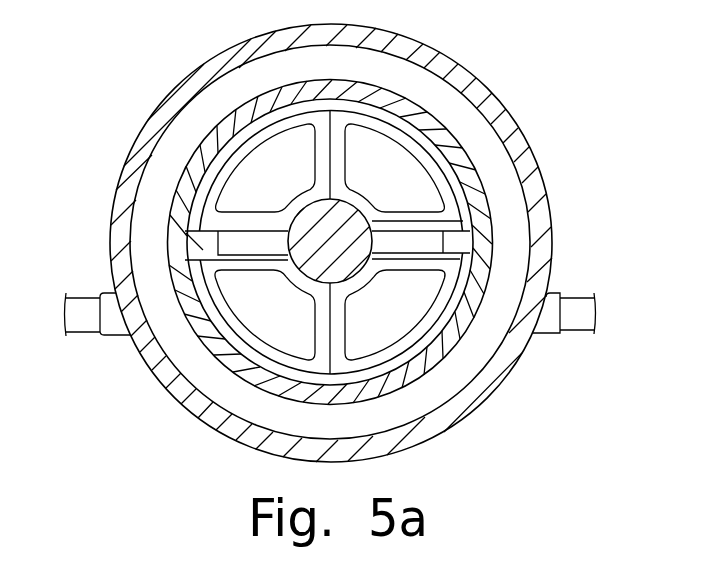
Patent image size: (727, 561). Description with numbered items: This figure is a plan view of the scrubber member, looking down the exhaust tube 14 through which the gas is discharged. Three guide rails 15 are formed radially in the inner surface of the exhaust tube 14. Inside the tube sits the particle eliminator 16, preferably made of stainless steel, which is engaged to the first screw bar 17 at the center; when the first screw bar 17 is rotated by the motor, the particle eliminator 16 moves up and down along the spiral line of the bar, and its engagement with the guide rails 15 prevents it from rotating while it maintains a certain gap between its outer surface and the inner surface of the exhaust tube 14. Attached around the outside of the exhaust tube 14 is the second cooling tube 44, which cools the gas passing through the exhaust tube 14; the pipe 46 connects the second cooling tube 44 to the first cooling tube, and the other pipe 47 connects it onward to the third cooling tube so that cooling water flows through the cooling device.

The exhaust tube 14 is at (197, 147).
The guide rails 15 is at (462, 242).
The particle eliminator 16 is at (422, 335).
The first screw bar 17 is at (222, 437).
The second cooling tube 44 is at (118, 178).
The pipe 46 is at (85, 335).
The pipe 47 is at (575, 333).